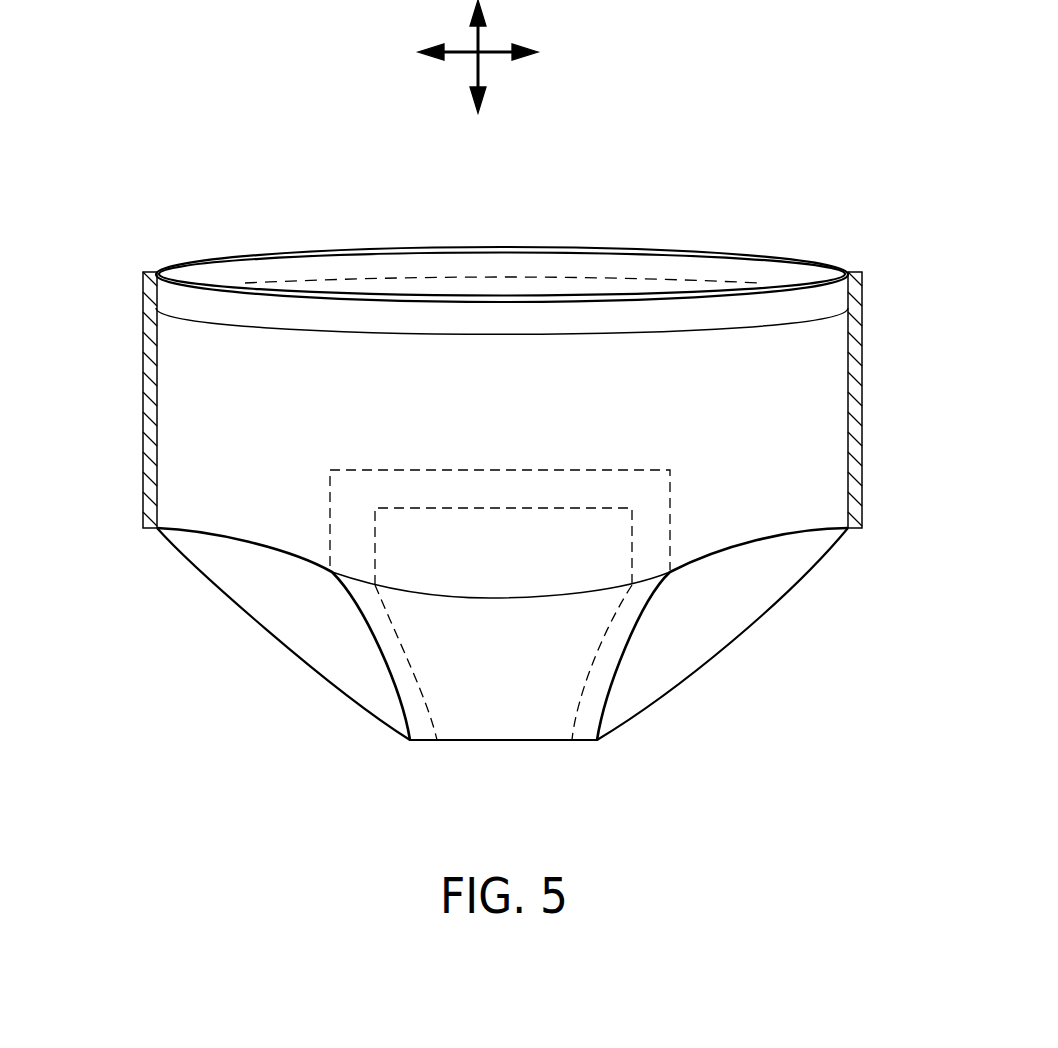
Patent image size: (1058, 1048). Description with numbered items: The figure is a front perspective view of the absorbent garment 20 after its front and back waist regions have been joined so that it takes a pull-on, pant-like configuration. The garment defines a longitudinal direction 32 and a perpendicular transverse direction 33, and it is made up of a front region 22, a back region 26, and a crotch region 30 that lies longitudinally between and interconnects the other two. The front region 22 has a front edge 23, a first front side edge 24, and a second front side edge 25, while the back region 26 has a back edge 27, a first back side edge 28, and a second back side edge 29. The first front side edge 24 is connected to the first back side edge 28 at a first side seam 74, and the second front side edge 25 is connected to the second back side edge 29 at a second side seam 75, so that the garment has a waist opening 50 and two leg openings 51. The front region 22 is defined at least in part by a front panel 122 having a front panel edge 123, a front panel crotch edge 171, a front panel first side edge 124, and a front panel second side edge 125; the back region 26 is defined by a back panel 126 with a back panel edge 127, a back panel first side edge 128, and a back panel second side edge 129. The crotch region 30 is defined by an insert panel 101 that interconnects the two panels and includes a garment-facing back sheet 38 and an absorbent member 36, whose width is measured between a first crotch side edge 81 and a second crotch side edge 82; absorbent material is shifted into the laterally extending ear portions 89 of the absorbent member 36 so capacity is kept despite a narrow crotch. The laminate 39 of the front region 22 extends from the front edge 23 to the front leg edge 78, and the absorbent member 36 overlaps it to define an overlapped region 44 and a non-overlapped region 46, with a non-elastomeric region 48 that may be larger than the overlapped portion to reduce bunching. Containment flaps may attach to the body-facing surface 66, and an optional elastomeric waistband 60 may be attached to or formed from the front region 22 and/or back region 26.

The absorbent garment 20 is at (647, 160).
The front region 22 is at (812, 480).
The front edge 23 is at (540, 300).
The first front side edge 24 is at (862, 418).
The second front side edge 25 is at (143, 407).
The back region 26 is at (476, 255).
The back edge 27 is at (243, 256).
The first back side edge 28 is at (862, 388).
The second back side edge 29 is at (143, 452).
The crotch region 30 is at (518, 780).
The longitudinal direction 32 is at (471, 35).
The transverse direction 33 is at (489, 58).
The absorbent member 36 is at (572, 508).
The back sheet 38 is at (450, 722).
The laminate 39 is at (178, 338).
The overlapped region 44 is at (517, 561).
The non-overlapped region 46 is at (265, 442).
The non-elastomeric region 48 is at (571, 574).
The waist opening 50 is at (418, 252).
The leg openings 51 is at (302, 636).
The elastomeric waistband 60 is at (702, 270).
The body-facing surface 66 is at (751, 258).
The first side seam 74 is at (862, 353).
The second side seam 75 is at (143, 346).
The front leg edge 78 is at (201, 530).
The first crotch side edge 81 is at (598, 742).
The second crotch side edge 82 is at (410, 742).
The ear portions 89 is at (632, 548).
The insert panel 101 is at (598, 672).
The front panel 122 is at (820, 448).
The front panel edge 123 is at (577, 300).
The front panel first side edge 124 is at (862, 447).
The front panel second side edge 125 is at (143, 388).
The back panel 126 is at (777, 567).
The back panel edge 127 is at (297, 250).
The back panel first side edge 128 is at (862, 512).
The back panel second side edge 129 is at (143, 492).
The front panel crotch edge 171 is at (480, 600).